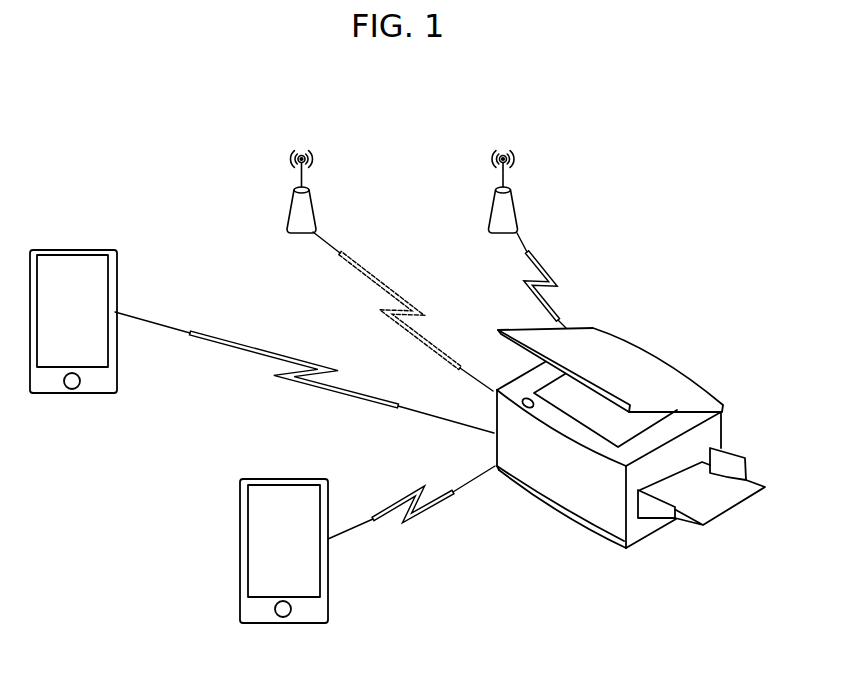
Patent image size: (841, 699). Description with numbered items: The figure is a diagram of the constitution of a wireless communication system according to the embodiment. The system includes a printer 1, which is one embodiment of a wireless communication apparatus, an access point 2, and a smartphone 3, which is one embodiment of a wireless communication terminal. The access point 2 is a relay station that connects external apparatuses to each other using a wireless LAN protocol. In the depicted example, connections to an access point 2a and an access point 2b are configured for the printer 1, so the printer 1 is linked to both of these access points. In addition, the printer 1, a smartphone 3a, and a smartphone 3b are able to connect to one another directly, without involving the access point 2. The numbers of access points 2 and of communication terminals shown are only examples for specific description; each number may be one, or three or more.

The printer 1 is at (601, 331).
The access point 2 is at (443, 192).
The access point 2a is at (310, 207).
The access point 2b is at (514, 208).
The smartphone 3 is at (204, 419).
The smartphone 3a is at (77, 250).
The smartphone 3b is at (293, 478).